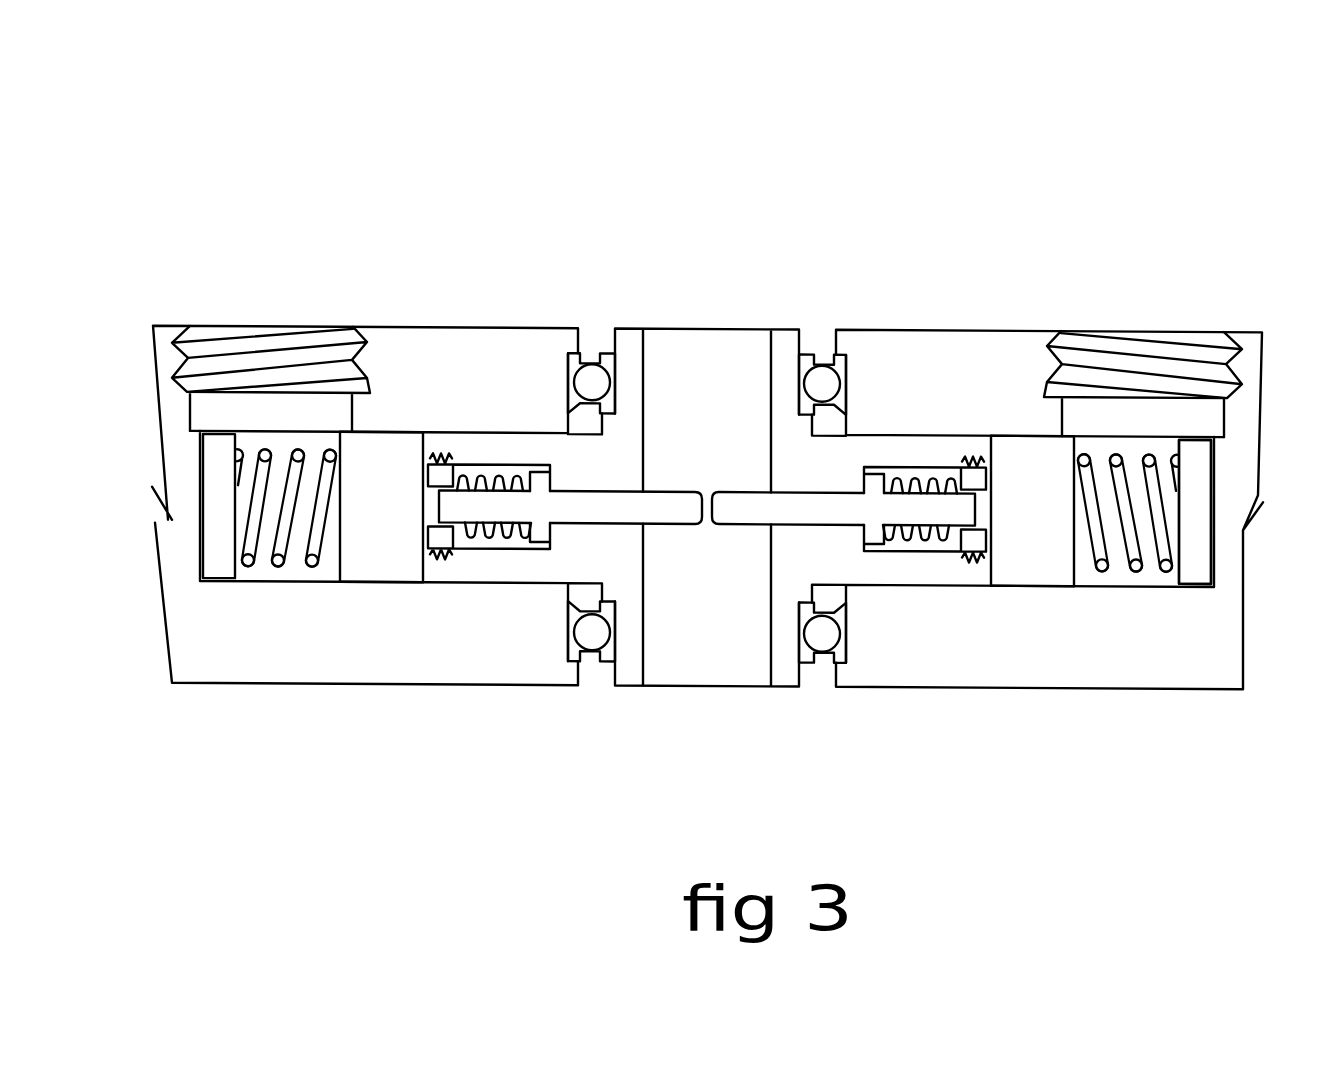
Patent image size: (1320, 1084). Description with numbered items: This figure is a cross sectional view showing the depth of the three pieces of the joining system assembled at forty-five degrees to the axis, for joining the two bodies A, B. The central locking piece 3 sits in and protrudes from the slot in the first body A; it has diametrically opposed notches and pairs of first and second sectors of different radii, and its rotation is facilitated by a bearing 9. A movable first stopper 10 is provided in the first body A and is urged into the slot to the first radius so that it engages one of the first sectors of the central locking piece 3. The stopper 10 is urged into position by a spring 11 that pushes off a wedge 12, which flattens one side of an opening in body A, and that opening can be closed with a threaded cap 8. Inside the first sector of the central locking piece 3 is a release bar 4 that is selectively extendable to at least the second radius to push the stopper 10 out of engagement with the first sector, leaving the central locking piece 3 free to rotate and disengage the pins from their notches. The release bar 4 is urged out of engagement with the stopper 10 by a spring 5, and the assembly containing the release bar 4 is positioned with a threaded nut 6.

The central locking piece 3 is at (688, 385).
The release bar 4 is at (872, 505).
The spring 5 is at (915, 478).
The threaded nut 6 is at (452, 477).
The threaded cap 8 is at (302, 338).
The bearing 9 is at (592, 640).
The first stopper 10 is at (1040, 493).
The spring 11 is at (1122, 465).
The wedge 12 is at (1200, 548).
The first body A is at (362, 643).
The second body B is at (987, 383).